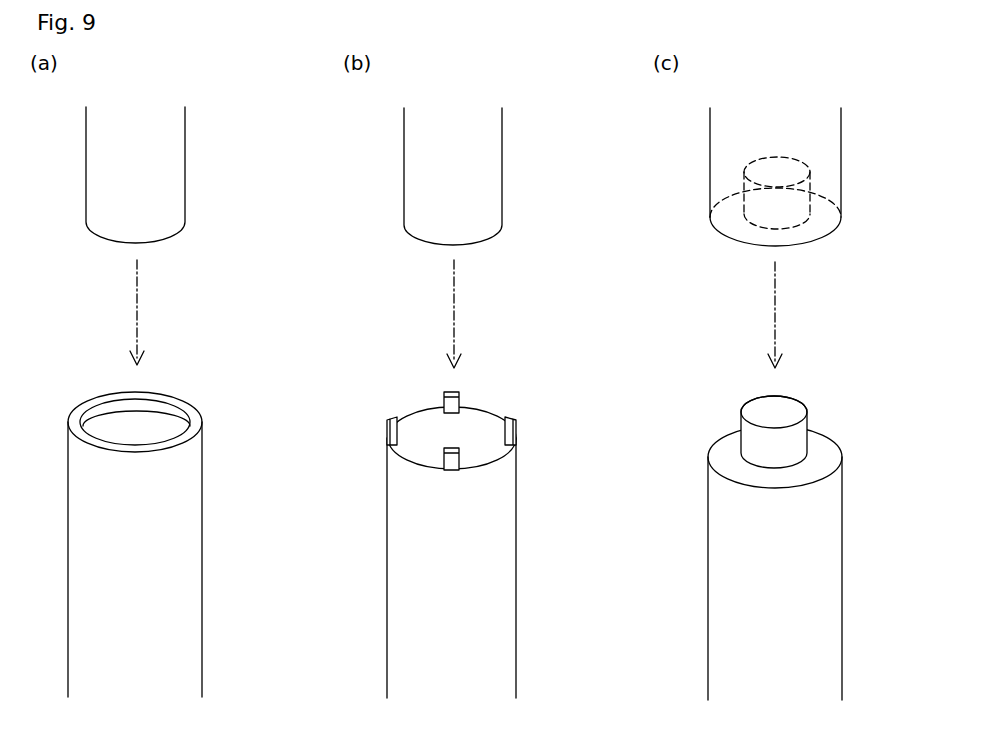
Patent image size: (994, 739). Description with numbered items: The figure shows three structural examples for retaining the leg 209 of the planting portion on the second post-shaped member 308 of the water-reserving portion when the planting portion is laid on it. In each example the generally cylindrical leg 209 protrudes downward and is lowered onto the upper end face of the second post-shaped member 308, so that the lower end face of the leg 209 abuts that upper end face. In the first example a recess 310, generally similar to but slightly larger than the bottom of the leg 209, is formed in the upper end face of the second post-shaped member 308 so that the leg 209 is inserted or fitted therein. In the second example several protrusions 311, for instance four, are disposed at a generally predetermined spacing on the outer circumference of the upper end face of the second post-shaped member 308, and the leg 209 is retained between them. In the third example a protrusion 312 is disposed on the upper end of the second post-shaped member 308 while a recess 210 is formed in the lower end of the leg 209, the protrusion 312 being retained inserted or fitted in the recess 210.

The leg 209 is at (170, 173).
The recess 210 is at (803, 203).
The second post-shaped member 308 is at (185, 492).
The recess 310 is at (152, 423).
The protrusion 311 is at (513, 433).
The protrusion 312 is at (795, 412).